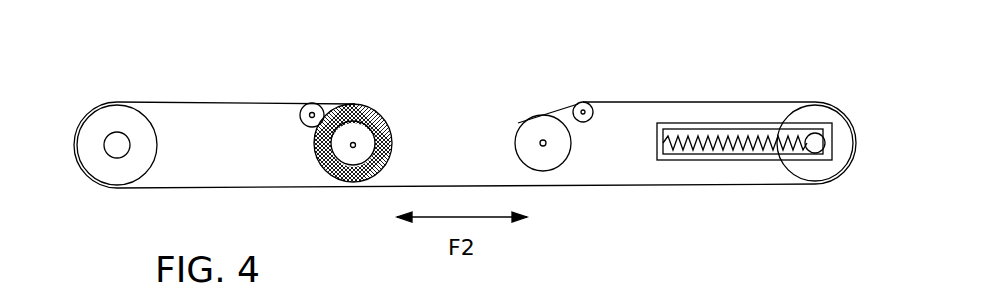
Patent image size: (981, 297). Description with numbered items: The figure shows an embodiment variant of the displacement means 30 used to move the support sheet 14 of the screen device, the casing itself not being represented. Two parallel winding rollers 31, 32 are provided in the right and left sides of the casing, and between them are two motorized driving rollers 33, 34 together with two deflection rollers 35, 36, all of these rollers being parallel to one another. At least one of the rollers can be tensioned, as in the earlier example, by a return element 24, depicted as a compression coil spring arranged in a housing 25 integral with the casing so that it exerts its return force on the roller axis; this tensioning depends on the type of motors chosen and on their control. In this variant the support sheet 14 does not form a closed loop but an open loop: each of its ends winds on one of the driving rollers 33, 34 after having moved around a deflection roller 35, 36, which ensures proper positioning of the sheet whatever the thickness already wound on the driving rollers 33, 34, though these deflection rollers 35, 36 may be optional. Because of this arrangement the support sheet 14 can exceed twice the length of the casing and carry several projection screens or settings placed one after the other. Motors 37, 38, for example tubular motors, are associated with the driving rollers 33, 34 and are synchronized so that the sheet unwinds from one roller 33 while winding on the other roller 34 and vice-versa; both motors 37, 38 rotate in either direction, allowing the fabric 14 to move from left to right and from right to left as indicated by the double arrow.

The support sheet 14 is at (660, 187).
The return means 24 is at (747, 140).
The housing 25 is at (692, 162).
The displacement means 30 is at (97, 98).
The winding roller 31 is at (103, 170).
The winding roller 32 is at (822, 184).
The driving roller 33 is at (360, 130).
The driving roller 34 is at (518, 128).
The deflection roller 35 is at (305, 105).
The deflection roller 36 is at (594, 105).
The motor 37 is at (355, 150).
The motor 38 is at (545, 148).